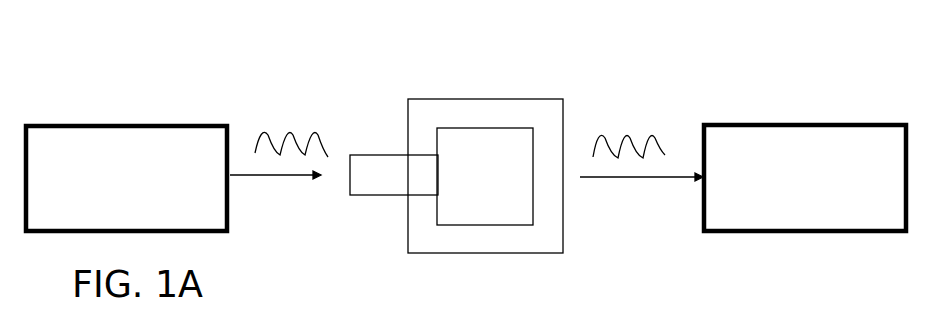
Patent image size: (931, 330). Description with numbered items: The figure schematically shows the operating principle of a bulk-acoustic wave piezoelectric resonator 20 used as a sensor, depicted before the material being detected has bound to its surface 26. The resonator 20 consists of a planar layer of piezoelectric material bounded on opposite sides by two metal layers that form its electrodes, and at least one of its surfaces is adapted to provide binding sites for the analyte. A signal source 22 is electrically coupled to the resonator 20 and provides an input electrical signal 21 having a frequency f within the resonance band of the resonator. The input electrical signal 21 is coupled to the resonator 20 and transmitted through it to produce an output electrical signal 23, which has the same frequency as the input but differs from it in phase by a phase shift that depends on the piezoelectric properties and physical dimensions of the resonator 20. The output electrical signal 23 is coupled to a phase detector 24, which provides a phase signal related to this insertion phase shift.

The signal source 22 is at (128, 123).
The input electrical signal 21 is at (263, 147).
The bulk-acoustic wave piezoelectric resonator 20 is at (464, 74).
The surface 26 is at (533, 193).
The output electrical signal 23 is at (603, 150).
The phase detector 24 is at (802, 233).